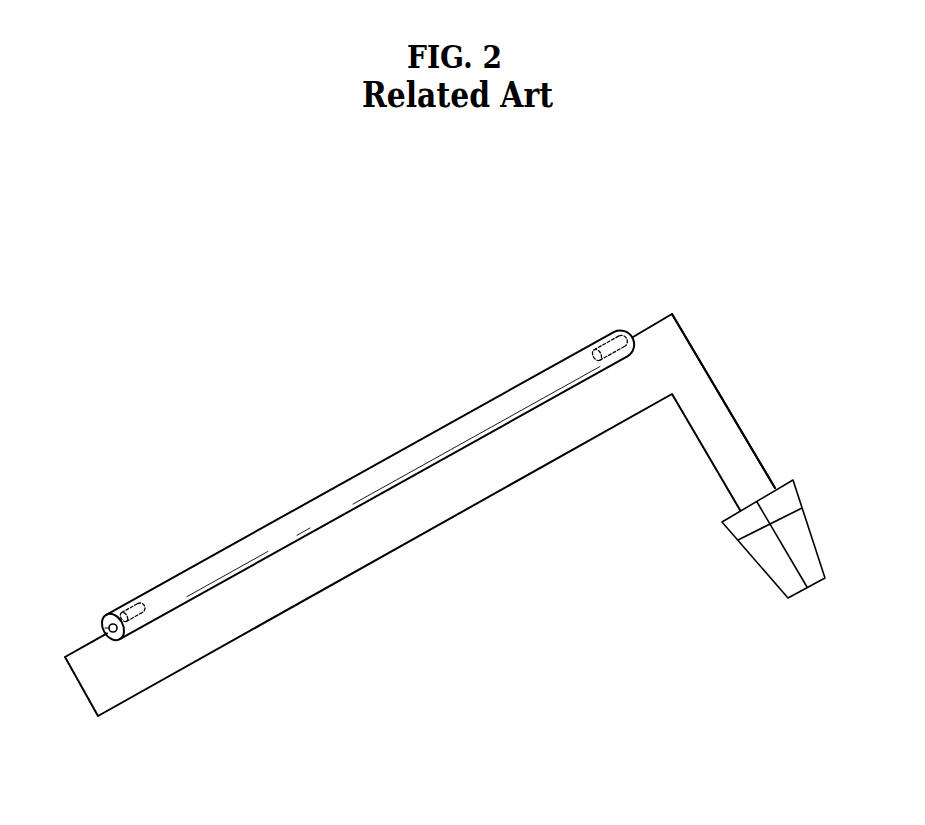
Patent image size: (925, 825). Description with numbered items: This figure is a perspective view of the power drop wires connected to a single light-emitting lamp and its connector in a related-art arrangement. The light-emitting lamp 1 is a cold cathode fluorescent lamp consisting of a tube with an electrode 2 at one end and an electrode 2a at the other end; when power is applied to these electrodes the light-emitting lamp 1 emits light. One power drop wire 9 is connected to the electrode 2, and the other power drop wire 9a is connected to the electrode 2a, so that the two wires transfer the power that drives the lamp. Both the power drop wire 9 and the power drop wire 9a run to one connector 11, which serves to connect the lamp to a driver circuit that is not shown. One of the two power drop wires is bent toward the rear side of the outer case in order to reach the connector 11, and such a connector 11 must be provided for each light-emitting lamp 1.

The light-emitting lamp 1 is at (380, 467).
The electrode 2 is at (128, 609).
The electrode 2a is at (602, 345).
The power drop wire 9 is at (700, 445).
The power drop wire 9a is at (712, 378).
The connector 11 is at (762, 557).